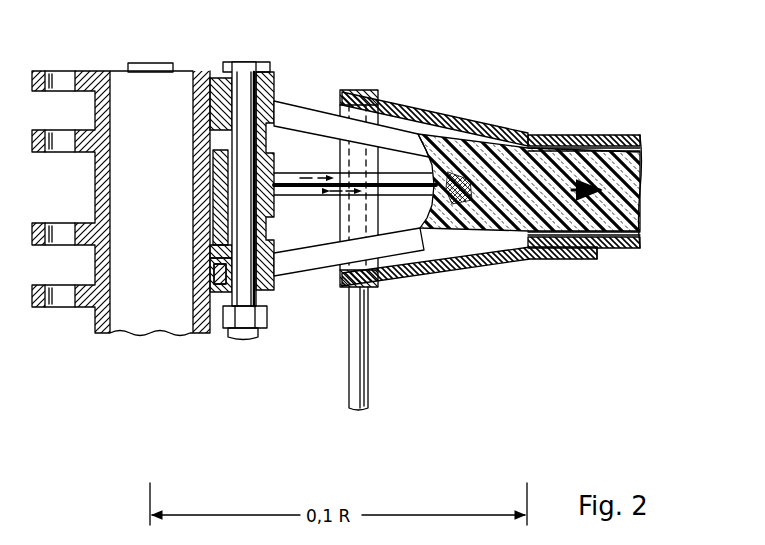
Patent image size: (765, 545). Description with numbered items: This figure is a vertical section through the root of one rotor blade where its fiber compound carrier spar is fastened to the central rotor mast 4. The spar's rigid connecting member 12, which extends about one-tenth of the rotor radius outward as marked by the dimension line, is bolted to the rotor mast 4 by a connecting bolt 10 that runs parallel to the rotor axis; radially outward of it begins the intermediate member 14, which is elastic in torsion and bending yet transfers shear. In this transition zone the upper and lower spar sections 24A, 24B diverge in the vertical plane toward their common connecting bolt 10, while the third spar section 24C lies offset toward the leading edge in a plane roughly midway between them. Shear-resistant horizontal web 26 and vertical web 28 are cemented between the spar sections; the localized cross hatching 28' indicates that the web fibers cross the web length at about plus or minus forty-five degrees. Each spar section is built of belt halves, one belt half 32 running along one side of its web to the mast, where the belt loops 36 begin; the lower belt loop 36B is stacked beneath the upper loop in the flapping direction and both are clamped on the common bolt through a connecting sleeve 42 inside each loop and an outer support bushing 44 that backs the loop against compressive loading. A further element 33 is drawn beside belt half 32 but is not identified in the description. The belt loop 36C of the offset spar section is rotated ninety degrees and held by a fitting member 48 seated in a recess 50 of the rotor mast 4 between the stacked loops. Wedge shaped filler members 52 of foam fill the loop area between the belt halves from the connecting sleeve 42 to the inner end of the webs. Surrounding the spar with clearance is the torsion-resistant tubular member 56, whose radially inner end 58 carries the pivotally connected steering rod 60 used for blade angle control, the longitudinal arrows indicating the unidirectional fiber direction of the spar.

The rotor mast 4 is at (97, 67).
The connecting bolt 10 is at (142, 66).
The connecting member 12 is at (438, 130).
The intermediate member 14 is at (627, 136).
The spar section 24A is at (508, 136).
The spar section 24B is at (500, 240).
The spar section 24C is at (390, 170).
The horizontal web 26 is at (446, 140).
The vertical web 28 is at (584, 235).
The localized cross hatching 28' is at (520, 256).
The belt half 32 is at (290, 177).
The annular channel 33 is at (315, 200).
The belt loops 36 is at (285, 98).
The belt loop 36B is at (290, 279).
The belt loop 36C is at (303, 214).
The connecting sleeve 42 is at (258, 80).
The outer support bushing 44 is at (212, 95).
The fitting member 48 is at (193, 233).
The recess 50 is at (213, 163).
The wedge shaped filler member 52 is at (357, 128).
The tubular member 56 is at (527, 253).
The radially inner end 58 is at (355, 92).
The steering rod 60 is at (360, 394).